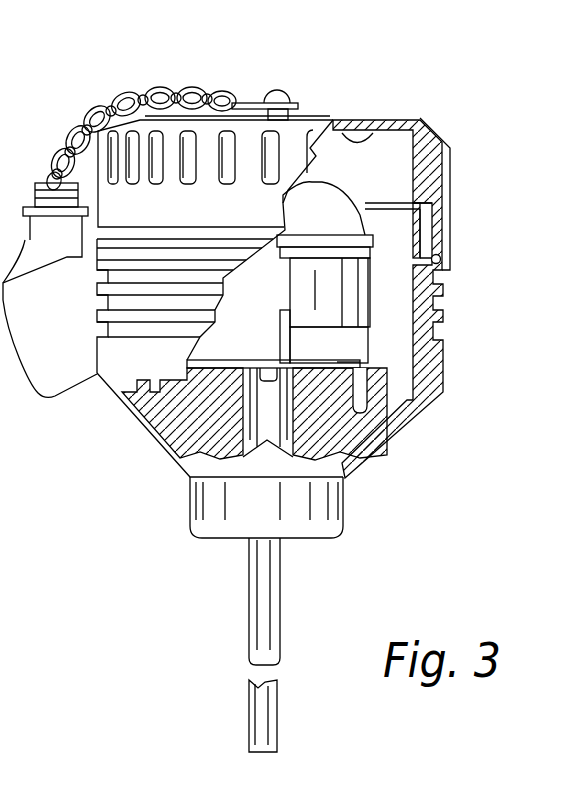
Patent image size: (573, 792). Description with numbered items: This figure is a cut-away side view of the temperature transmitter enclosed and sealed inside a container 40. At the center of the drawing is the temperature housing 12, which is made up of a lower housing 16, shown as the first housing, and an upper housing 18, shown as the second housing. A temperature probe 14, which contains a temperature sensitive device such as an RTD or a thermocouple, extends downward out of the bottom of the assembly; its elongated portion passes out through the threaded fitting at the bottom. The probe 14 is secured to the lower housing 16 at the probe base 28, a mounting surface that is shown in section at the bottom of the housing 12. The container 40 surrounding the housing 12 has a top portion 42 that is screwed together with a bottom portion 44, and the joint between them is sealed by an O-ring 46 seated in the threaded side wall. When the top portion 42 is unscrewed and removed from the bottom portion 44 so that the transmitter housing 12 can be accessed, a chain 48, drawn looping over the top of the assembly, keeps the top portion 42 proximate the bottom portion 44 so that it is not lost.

The temperature housing 12 is at (364, 220).
The temperature probe 14 is at (249, 598).
The lower housing 16 is at (372, 286).
The upper housing 18 is at (337, 194).
The probe base 28 is at (368, 327).
The container 40 is at (352, 118).
The top portion 42 is at (300, 106).
The bottom portion 44 is at (125, 390).
The O-ring 46 is at (440, 257).
The chain 48 is at (117, 94).